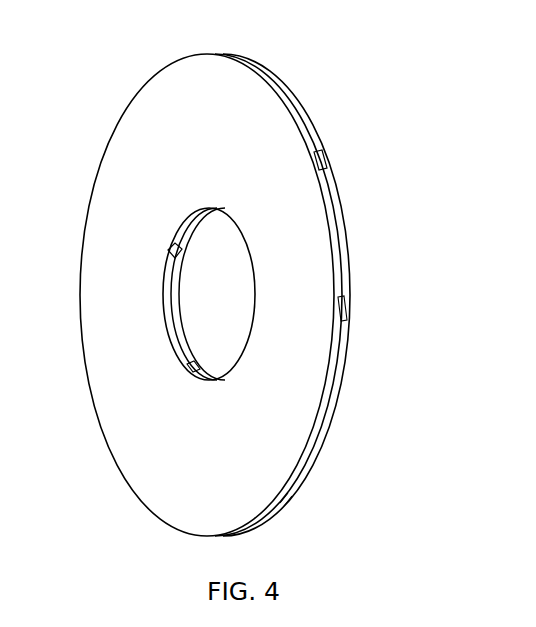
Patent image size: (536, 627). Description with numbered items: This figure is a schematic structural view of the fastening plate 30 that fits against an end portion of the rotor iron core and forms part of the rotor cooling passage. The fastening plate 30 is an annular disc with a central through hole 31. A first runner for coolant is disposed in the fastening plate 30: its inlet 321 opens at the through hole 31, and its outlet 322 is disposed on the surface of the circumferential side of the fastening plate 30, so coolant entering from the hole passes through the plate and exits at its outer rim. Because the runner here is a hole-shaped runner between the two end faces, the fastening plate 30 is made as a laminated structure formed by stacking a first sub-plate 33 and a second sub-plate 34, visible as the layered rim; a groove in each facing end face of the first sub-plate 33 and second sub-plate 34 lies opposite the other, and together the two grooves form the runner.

The fastening plate 30 is at (112, 76).
The through hole 31 is at (229, 358).
The inlet of the first runner 321 is at (170, 250).
The outlet of the first runner 322 is at (328, 162).
The first sub-plate 33 is at (336, 407).
The second sub-plate 34 is at (317, 428).